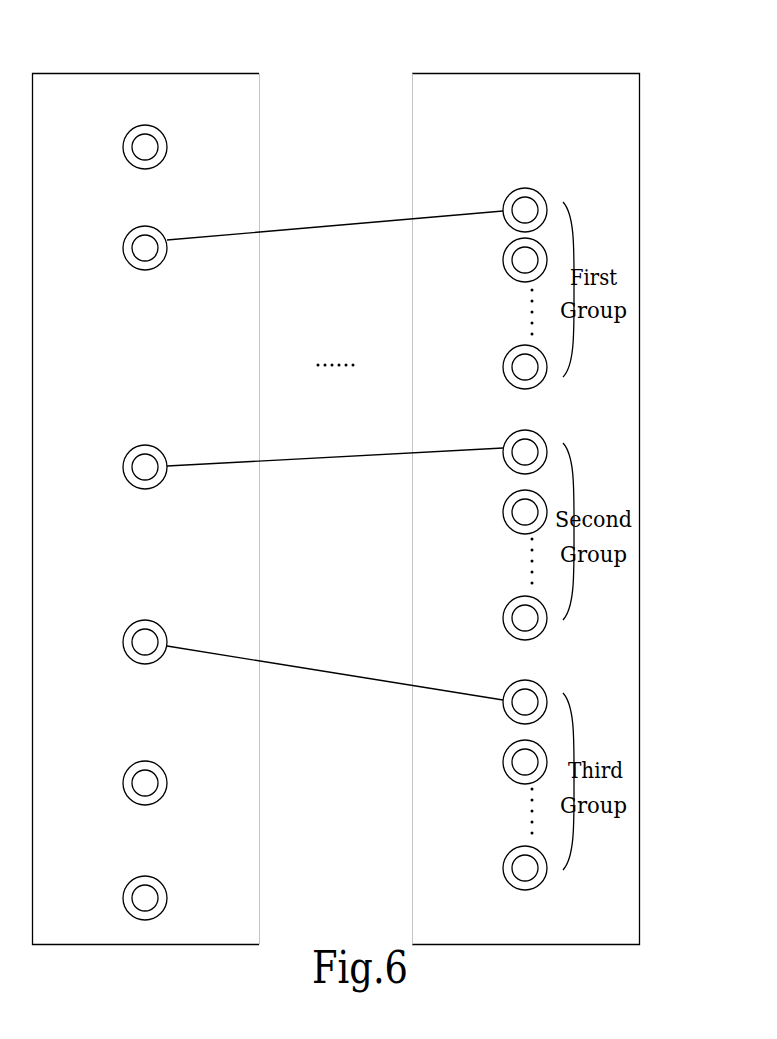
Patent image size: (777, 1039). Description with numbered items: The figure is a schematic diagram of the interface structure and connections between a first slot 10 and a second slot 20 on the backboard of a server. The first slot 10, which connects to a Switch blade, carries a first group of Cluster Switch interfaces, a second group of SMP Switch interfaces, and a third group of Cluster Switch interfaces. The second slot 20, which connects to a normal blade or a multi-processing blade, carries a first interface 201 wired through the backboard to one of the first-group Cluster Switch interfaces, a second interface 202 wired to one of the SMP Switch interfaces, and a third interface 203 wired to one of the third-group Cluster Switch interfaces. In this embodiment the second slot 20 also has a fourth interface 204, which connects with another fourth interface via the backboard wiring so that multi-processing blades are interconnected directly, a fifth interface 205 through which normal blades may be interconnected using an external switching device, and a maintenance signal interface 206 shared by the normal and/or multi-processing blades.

The first slot 10 is at (523, 73).
The second slot 20 is at (143, 73).
The first interface 201 is at (137, 228).
The second interface 202 is at (137, 447).
The third interface 203 is at (137, 622).
The fourth interface 204 is at (137, 763).
The fifth interface 205 is at (137, 127).
The maintenance signal interface 206 is at (137, 878).